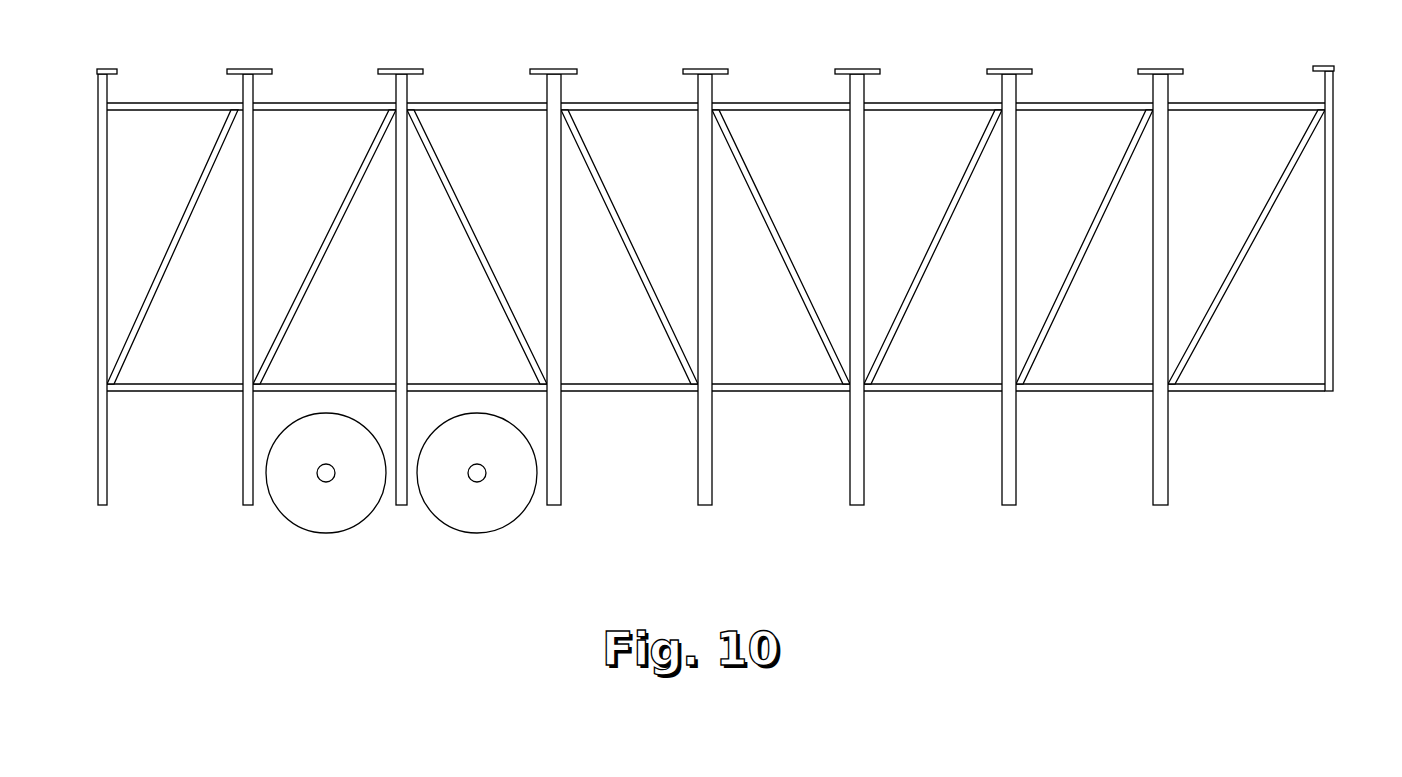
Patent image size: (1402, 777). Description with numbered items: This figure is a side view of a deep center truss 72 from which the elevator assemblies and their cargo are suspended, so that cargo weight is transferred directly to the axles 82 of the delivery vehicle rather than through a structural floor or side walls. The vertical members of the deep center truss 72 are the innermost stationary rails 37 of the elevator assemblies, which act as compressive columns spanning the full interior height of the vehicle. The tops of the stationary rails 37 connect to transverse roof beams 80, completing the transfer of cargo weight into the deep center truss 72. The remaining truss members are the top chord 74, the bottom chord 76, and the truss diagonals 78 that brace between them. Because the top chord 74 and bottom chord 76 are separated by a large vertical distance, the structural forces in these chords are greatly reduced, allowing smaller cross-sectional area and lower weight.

The deep center truss 72 is at (749, 254).
The top chord 74 is at (612, 103).
The bottom chord 76 is at (1090, 392).
The truss diagonal 78 is at (1268, 197).
The stationary rail 37 is at (697, 253).
The transverse roof beam 80 is at (1145, 68).
The axle 82 is at (335, 476).